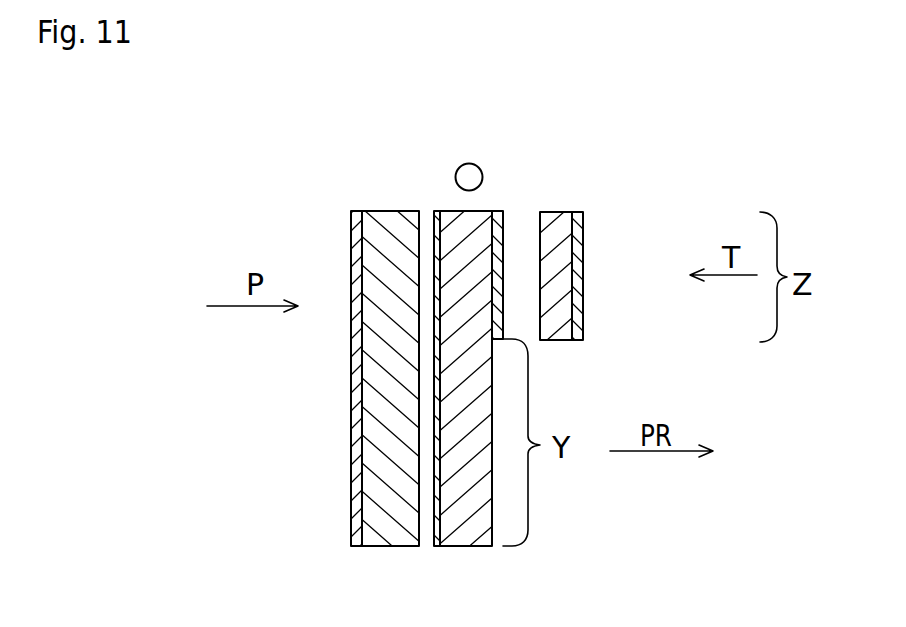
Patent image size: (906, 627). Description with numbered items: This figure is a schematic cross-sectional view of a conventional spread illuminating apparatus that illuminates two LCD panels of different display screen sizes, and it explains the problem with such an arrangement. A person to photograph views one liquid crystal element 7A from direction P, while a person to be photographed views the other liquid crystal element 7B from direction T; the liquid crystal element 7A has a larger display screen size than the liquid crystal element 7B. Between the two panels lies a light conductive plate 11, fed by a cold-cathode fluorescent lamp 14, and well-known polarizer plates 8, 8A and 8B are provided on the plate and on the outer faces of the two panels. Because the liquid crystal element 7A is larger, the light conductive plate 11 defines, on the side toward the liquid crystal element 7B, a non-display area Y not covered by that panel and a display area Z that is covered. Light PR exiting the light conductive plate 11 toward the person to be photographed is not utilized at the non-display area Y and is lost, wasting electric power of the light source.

The liquid crystal element 7A is at (393, 224).
The polarizer plate 8A is at (356, 424).
The polarizer plate 8 is at (494, 216).
The light conductive plate 11 is at (477, 528).
The cold-cathode fluorescent lamp 14 is at (469, 177).
The liquid crystal element 7B is at (553, 227).
The polarizer plate 8B is at (577, 265).